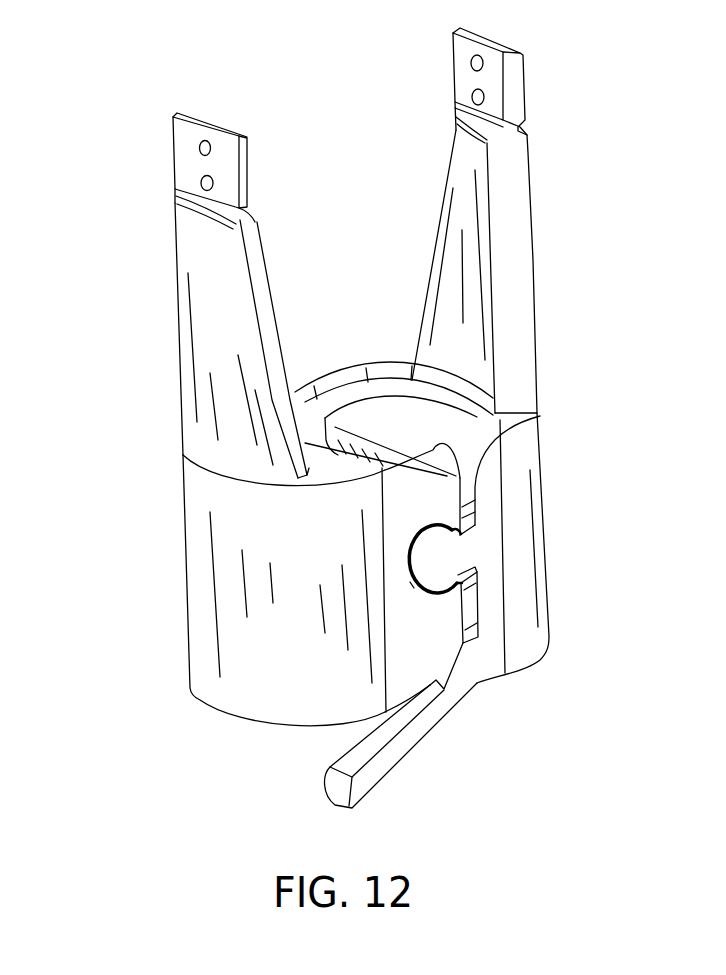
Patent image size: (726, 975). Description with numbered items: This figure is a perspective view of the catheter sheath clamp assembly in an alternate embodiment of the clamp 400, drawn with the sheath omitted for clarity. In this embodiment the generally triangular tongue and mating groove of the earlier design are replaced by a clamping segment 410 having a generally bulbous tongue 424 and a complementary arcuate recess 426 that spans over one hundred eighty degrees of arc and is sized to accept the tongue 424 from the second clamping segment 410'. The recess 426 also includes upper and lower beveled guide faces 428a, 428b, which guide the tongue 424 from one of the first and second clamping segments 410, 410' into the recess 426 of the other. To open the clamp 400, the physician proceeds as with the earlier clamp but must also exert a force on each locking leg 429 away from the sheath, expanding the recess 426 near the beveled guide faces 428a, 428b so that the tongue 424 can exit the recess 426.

The clamp 400 is at (345, 288).
The clamping segment 410 is at (300, 419).
The second clamping segment 410' is at (554, 220).
The tongue 424 is at (422, 546).
The arcuate recess 426 is at (407, 590).
The upper beveled guide face 428a is at (475, 518).
The lower beveled guide face 428b is at (476, 582).
The locking leg 429 is at (442, 740).